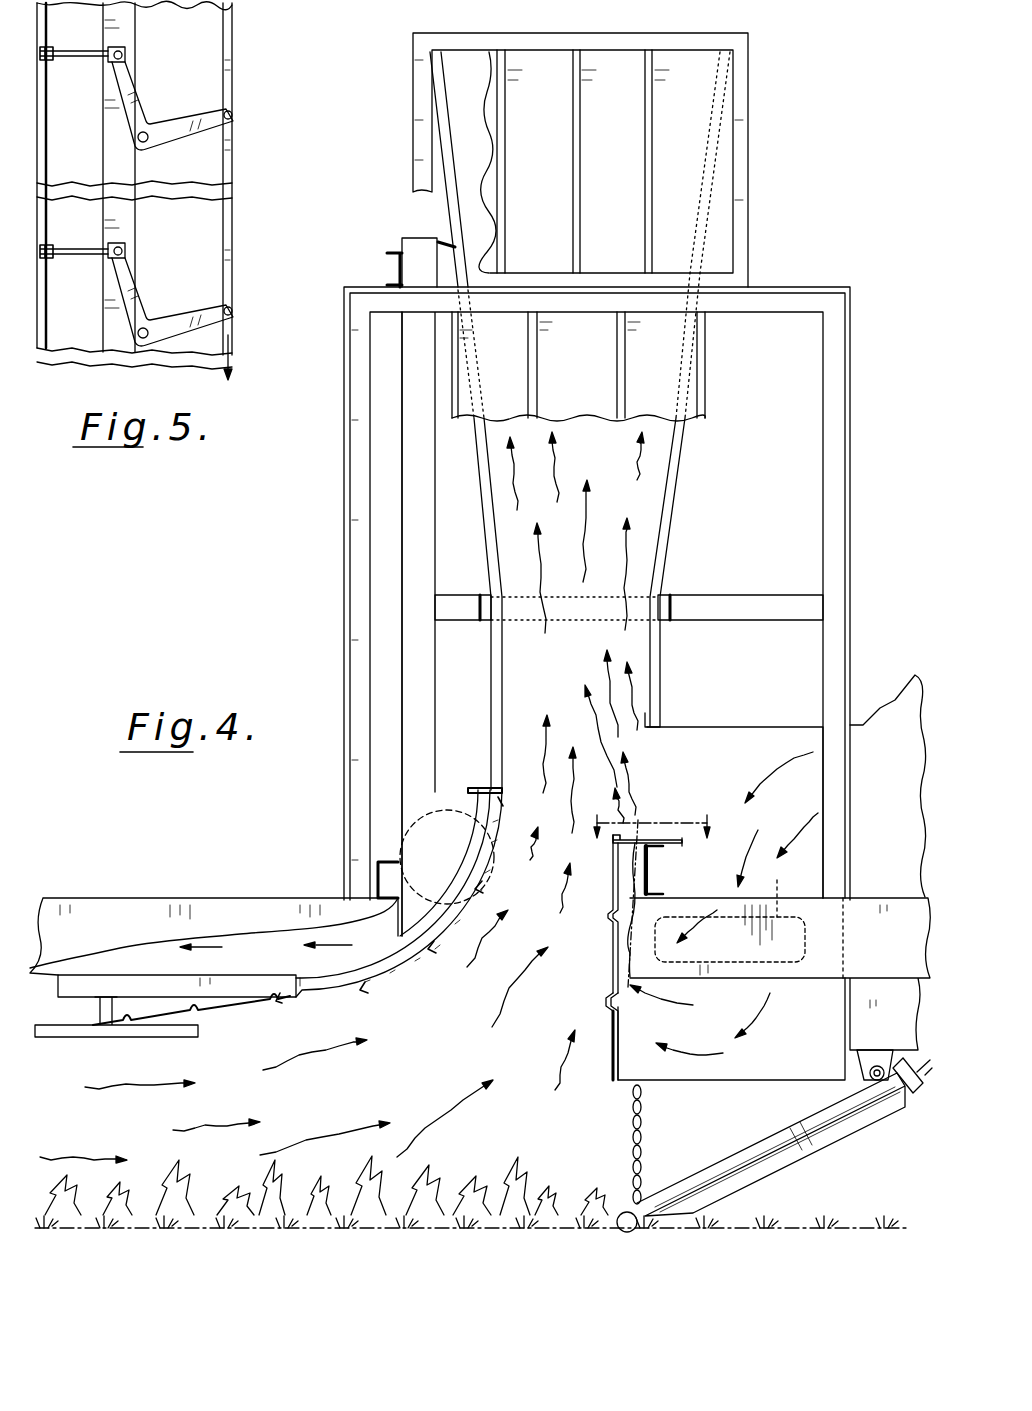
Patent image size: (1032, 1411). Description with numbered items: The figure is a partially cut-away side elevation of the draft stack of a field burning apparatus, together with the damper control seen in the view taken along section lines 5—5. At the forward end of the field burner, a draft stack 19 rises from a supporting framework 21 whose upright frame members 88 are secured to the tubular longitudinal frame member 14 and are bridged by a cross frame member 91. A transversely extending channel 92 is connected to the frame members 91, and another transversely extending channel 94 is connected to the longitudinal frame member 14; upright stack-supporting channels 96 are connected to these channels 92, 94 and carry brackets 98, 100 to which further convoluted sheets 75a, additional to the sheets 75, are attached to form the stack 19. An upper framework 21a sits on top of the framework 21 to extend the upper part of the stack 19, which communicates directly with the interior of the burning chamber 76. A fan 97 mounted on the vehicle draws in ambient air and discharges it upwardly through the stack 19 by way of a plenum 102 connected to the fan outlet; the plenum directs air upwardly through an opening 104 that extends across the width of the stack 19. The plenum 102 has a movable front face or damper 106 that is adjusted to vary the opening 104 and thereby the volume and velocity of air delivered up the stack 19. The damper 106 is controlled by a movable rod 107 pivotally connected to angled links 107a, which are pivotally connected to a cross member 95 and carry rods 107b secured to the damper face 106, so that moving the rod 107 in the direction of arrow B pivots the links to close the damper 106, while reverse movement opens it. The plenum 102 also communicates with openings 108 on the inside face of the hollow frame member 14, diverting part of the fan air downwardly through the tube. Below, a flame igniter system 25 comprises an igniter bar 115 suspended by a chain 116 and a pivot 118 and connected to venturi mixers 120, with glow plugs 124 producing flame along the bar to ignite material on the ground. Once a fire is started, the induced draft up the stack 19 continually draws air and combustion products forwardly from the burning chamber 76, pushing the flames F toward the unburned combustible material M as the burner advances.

In FIG. 4, the longitudinal frame member 14 is at (72, 899).
In FIG. 4, the draft stack 19 is at (672, 504).
In FIG. 4, the supporting framework 21 is at (828, 269).
In FIG. 4, the upper framework 21a is at (756, 102).
In FIG. 4, the flame igniter system 25 is at (832, 1153).
In FIG. 4, the curved duct section 75 is at (290, 981).
In FIG. 4, the convoluted sheets 75a is at (655, 383).
In FIG. 4, the burning chamber 76 is at (65, 1121).
In FIG. 4, the upright frame members 88 is at (835, 446).
In FIG. 4, the cross frame member 91 is at (770, 300).
In FIG. 4, the transversely extending channel 92 is at (397, 271).
In FIG. 4, the transversely extending channel 94 is at (376, 875).
In FIG. 5, the cross member 95 is at (133, 231).
In FIG. 4, the cross member 95 is at (663, 884).
In FIG. 4, the upright stack-supporting channels 96 is at (432, 686).
In FIG. 4, the fan 97 is at (873, 698).
In FIG. 4, the bracket 98 is at (456, 608).
In FIG. 4, the bracket 100 is at (447, 243).
In FIG. 4, the plenum 102 is at (738, 728).
In FIG. 5, the opening 104 is at (95, 155).
In FIG. 4, the opening 104 is at (615, 859).
In FIG. 5, the damper 106 is at (50, 25).
In FIG. 4, the damper 106 is at (613, 886).
In FIG. 5, the movable rod 107 is at (232, 162).
In FIG. 5, the angled links 107a is at (190, 316).
In FIG. 4, the angled links 107a is at (732, 857).
In FIG. 5, the rods 107b is at (97, 305).
In FIG. 4, the rods 107b is at (636, 838).
In FIG. 4, the openings 108 is at (770, 918).
In FIG. 4, the igniter bar 115 is at (622, 1213).
In FIG. 4, the chain 116 is at (637, 1112).
In FIG. 4, the pivot 118 is at (876, 1066).
In FIG. 4, the venturi mixers 120 is at (727, 1168).
In FIG. 4, the glow plugs 124 is at (455, 807).
In FIG. 4, the section lines 5— 5 is at (649, 826).
In FIG. 5, the arrow B is at (237, 368).
In FIG. 4, the flames F is at (386, 1162).
In FIG. 4, the unburned combustible material M is at (815, 1226).